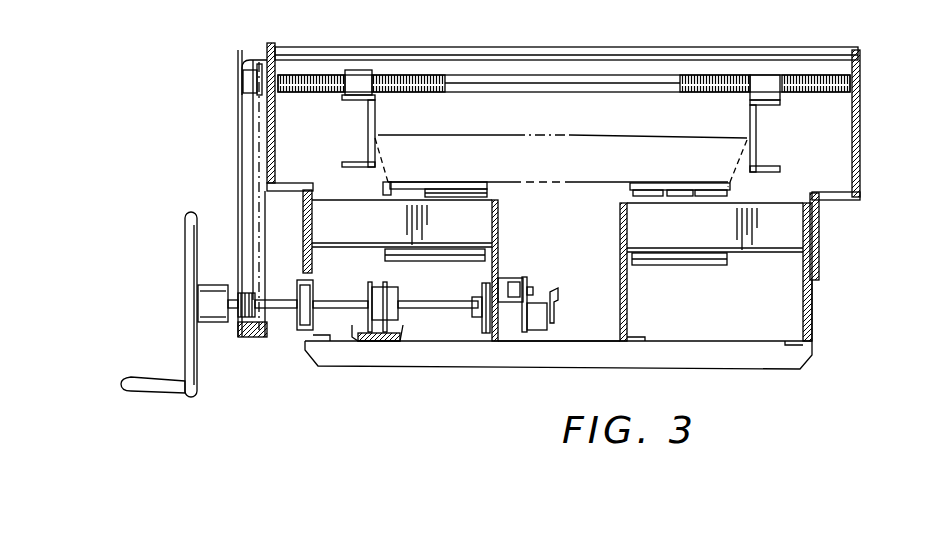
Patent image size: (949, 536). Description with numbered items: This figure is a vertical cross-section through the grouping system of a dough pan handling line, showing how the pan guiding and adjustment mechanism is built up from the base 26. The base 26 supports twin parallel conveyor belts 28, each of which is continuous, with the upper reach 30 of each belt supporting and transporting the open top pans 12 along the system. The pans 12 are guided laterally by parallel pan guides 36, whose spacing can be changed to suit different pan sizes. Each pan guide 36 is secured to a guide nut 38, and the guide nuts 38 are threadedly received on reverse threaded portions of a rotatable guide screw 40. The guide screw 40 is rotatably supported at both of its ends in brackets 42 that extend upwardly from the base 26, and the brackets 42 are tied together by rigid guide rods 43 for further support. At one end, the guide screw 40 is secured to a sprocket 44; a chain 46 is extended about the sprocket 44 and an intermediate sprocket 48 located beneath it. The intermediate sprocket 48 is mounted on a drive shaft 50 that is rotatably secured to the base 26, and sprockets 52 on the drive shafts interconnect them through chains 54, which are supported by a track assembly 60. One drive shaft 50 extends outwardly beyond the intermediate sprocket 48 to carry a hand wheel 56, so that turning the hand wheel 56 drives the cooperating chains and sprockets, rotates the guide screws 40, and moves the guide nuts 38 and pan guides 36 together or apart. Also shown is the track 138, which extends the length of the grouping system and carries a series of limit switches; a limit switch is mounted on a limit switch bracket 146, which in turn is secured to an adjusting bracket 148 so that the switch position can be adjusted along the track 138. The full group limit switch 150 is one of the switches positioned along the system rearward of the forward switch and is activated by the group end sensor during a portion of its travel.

The pan 12 is at (580, 170).
The base 26 is at (727, 362).
The conveyor belt 28 is at (488, 195).
The upper reach 30 is at (433, 182).
The pan guide 36 is at (368, 130).
The guide nut 38 is at (355, 70).
The guide screw 40 is at (598, 91).
The bracket 42 is at (277, 113).
The guide rod 43 is at (503, 47).
The sprocket 44 is at (253, 97).
The chain 46 is at (252, 144).
The intermediate sprocket 48 is at (249, 337).
The drive shaft 50 is at (333, 300).
The sprocket 52 is at (395, 290).
The chain 54 is at (385, 283).
The hand wheel 56 is at (185, 264).
The track assembly 60 is at (405, 336).
The track 138 is at (510, 278).
The limit switch bracket 146 is at (515, 330).
The adjusting bracket 148 is at (526, 278).
The full group limit switch 150 is at (556, 323).